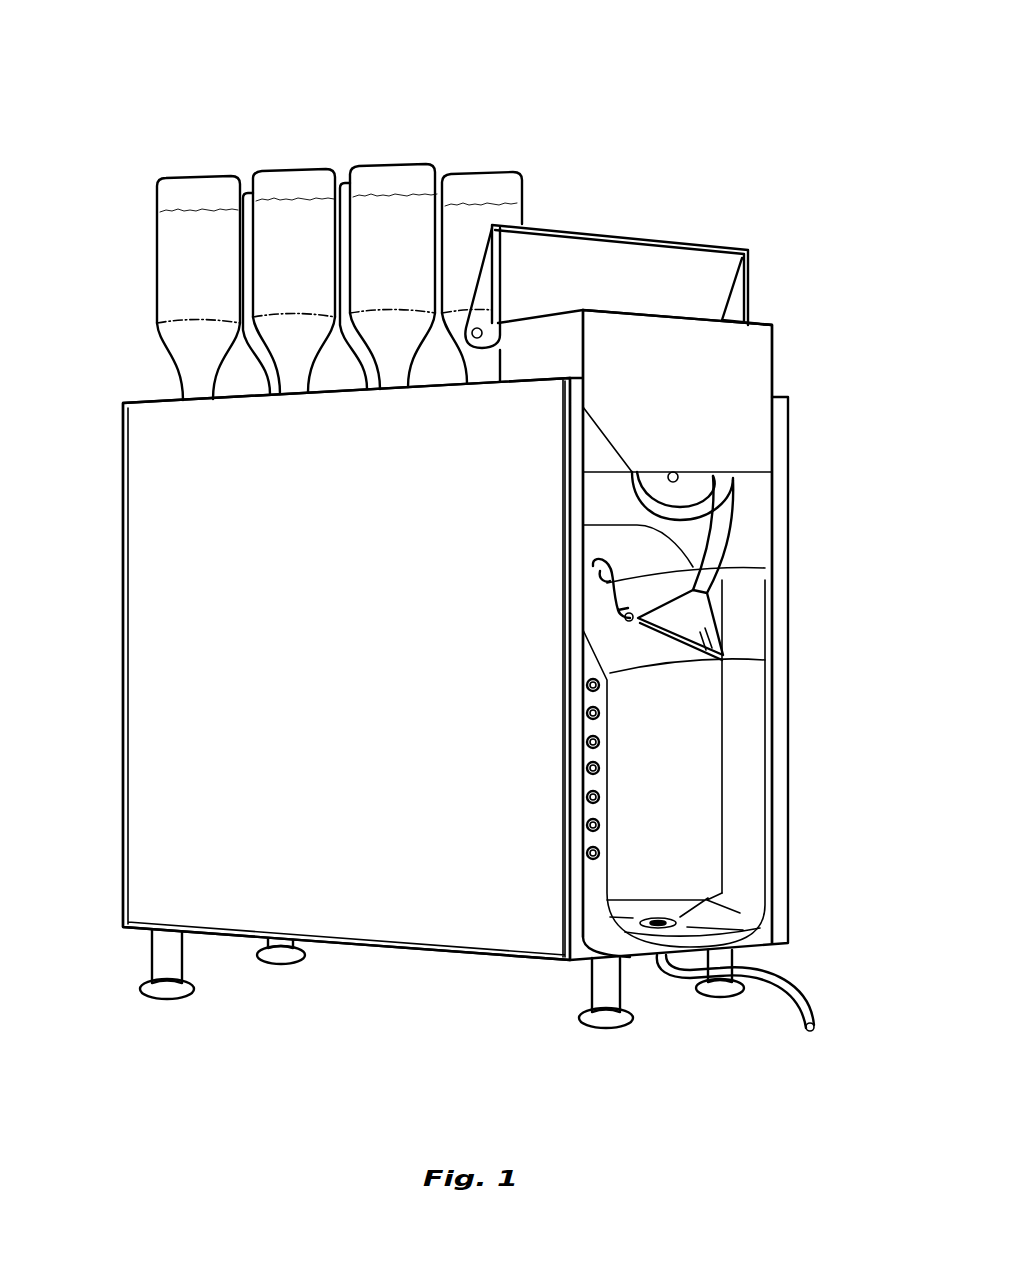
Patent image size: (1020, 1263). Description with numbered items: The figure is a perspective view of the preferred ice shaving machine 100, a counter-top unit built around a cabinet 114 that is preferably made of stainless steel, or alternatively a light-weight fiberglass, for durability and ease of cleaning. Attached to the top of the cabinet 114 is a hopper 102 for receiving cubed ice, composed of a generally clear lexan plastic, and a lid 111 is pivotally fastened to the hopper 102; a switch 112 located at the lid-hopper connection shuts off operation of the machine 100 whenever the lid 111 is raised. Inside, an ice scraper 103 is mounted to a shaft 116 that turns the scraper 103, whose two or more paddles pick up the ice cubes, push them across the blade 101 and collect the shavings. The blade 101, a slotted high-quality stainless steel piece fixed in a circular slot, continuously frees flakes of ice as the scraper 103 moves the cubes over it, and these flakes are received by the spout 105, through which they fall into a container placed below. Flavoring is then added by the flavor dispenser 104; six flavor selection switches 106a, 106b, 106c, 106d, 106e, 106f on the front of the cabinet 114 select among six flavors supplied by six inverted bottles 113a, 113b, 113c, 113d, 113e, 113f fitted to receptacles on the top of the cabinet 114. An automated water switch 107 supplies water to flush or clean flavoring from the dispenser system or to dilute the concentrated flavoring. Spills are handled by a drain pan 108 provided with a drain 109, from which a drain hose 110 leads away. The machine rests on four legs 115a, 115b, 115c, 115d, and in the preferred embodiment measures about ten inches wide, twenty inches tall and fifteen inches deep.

The ice shaving machine 100 is at (110, 535).
The blade 101 is at (728, 492).
The hopper 102 is at (747, 347).
The ice scraper 103 is at (695, 482).
The flavor dispenser 104 is at (603, 563).
The spout 105 is at (710, 582).
The flavor selection switch 106a is at (600, 685).
The flavor selection switch 106b is at (600, 713).
The flavor selection switch 106c is at (600, 742).
The flavor selection switch 106d is at (600, 768).
The flavor selection switch 106e is at (600, 797).
The flavor selection switch 106f is at (600, 825).
The automated water switch 107 is at (600, 853).
The drain pan 108 is at (742, 912).
The drain 109 is at (680, 926).
The drain hose 110 is at (797, 994).
The lid 111 is at (692, 270).
The switch 112 is at (482, 297).
The inverted bottle 113a is at (166, 238).
The inverted bottle 113b is at (247, 190).
The inverted bottle 113c is at (294, 173).
The inverted bottle 113d is at (344, 183).
The inverted bottle 113e is at (388, 173).
The inverted bottle 113f is at (466, 176).
The cabinet 114 is at (172, 713).
The leg 115a is at (175, 965).
The leg 115b is at (284, 948).
The leg 115c is at (593, 988).
The leg 115d is at (718, 973).
The shaft 116 is at (675, 474).